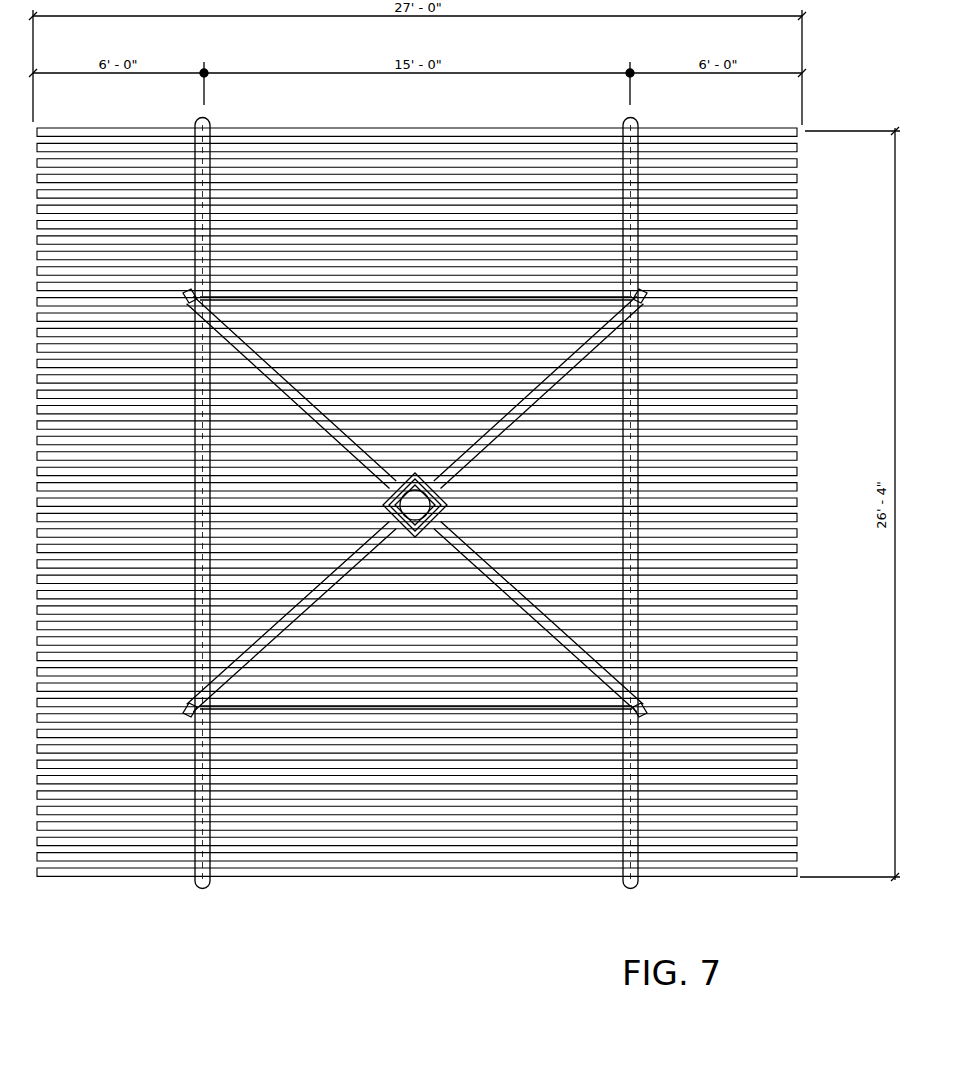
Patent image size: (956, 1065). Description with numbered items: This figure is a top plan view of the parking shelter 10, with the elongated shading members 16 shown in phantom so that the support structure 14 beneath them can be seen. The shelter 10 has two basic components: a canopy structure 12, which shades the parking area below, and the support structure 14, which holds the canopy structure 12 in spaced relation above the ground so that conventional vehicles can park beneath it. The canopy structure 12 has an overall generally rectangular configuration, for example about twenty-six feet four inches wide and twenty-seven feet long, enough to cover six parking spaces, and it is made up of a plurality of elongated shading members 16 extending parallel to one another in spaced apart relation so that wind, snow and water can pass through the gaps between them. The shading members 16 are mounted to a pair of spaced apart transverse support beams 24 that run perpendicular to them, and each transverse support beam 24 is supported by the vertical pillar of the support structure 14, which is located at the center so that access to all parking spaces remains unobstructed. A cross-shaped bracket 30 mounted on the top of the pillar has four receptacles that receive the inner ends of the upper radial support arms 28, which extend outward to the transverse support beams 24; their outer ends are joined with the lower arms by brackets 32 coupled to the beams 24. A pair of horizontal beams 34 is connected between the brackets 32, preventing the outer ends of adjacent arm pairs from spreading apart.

The parking shelter 10 is at (417, 510).
The canopy structure 12 is at (437, 523).
The support structure 14 is at (417, 501).
The elongated shading members 16 is at (300, 126).
The transverse support beam 24 is at (188, 214).
The upper radial support arms 28 is at (510, 413).
The cross-shaped bracket 30 is at (388, 493).
The brackets 32 is at (185, 294).
The horizontal beams 34 is at (359, 297).